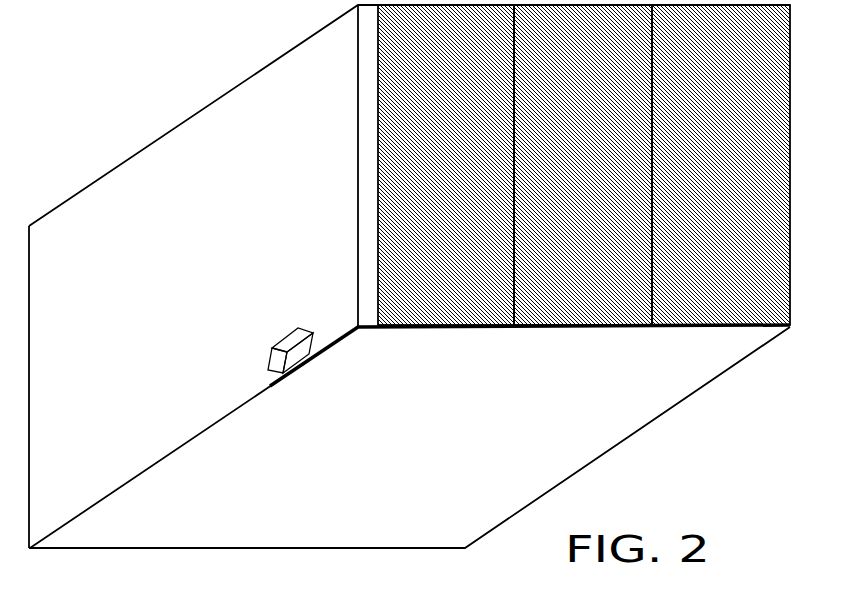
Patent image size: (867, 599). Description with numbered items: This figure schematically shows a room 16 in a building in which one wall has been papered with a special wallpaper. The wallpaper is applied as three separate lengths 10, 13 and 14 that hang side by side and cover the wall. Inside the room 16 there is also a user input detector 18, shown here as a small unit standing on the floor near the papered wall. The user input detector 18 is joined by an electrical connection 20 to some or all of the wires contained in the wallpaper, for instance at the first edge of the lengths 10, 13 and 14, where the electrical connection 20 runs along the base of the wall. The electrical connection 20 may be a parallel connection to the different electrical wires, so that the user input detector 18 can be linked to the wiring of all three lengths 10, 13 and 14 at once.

The length of wallpaper 10 is at (430, 42).
The length of wallpaper 13 is at (548, 85).
The length of wallpaper 14 is at (725, 156).
The room 16 is at (210, 59).
The user input detector 18 is at (270, 353).
The electrical connection 20 is at (368, 332).